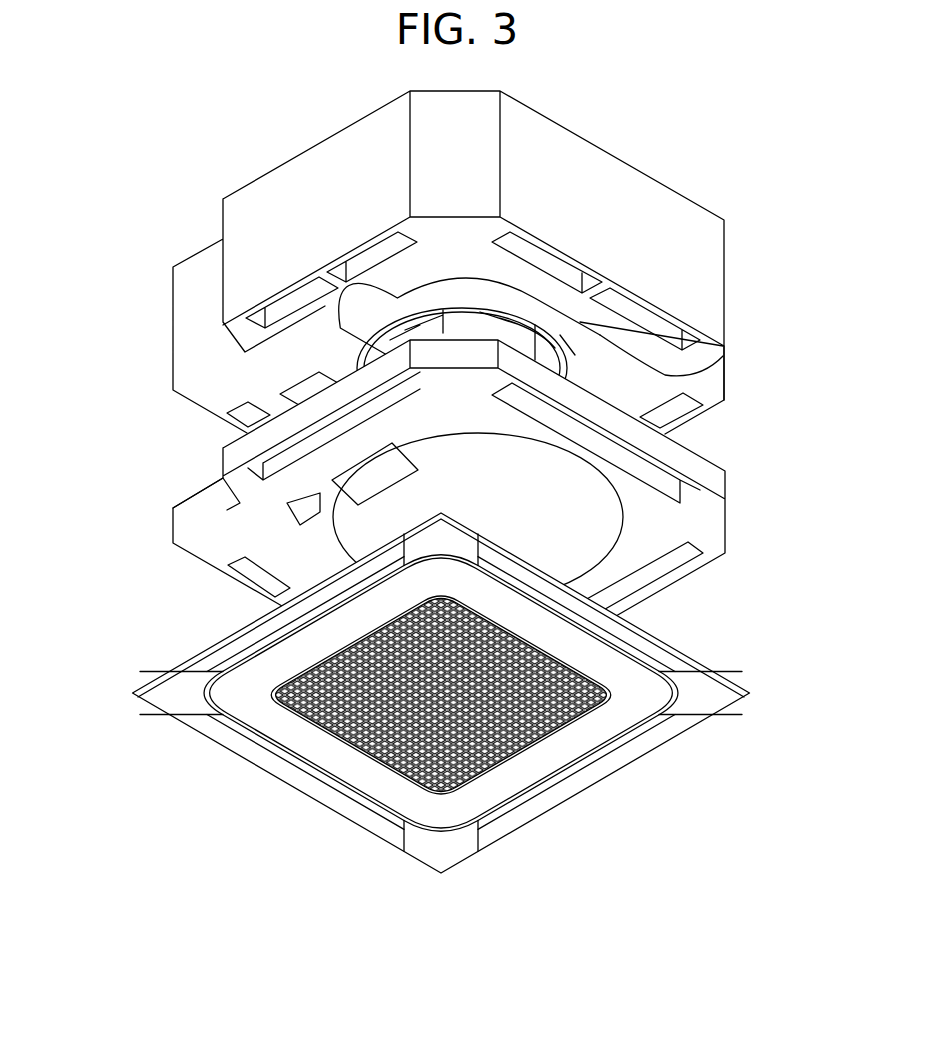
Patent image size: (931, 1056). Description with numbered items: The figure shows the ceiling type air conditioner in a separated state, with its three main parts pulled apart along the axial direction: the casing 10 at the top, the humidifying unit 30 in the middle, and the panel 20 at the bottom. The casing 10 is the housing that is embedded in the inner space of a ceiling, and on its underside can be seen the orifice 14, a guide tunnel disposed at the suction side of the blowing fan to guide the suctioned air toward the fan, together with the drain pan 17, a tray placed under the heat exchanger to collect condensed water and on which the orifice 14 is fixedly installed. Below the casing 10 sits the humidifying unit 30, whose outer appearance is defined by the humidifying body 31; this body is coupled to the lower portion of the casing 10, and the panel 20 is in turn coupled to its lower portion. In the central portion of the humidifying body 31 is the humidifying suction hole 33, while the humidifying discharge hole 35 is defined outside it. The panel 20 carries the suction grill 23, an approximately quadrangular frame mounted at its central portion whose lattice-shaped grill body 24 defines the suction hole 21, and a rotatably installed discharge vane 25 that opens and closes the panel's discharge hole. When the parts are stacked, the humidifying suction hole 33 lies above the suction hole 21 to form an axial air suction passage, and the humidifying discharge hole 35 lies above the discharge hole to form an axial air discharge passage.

The casing 10 is at (427, 262).
The orifice 14 is at (606, 377).
The drain pan 17 is at (716, 392).
The panel 20 is at (393, 717).
The suction hole 21 is at (490, 760).
The suction grill 23 is at (453, 800).
The grill body 24 is at (528, 752).
The discharge vane 25 is at (300, 763).
The humidifying unit 30 is at (415, 524).
The humidifying body 31 is at (197, 507).
The humidifying suction hole 33 is at (570, 528).
The humidifying discharge hole 35 is at (322, 444).